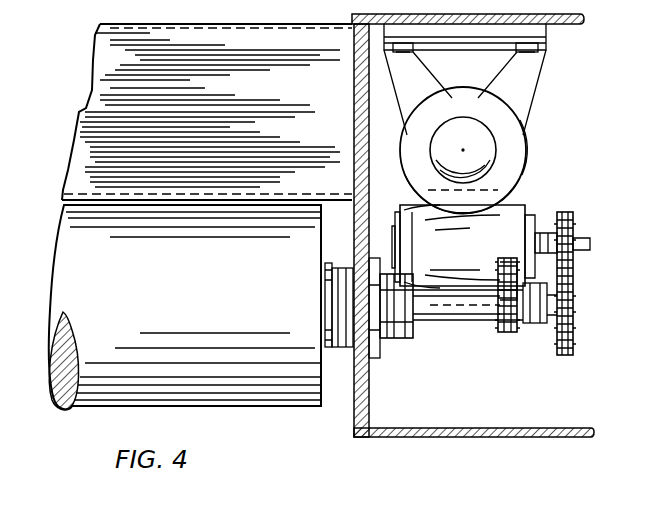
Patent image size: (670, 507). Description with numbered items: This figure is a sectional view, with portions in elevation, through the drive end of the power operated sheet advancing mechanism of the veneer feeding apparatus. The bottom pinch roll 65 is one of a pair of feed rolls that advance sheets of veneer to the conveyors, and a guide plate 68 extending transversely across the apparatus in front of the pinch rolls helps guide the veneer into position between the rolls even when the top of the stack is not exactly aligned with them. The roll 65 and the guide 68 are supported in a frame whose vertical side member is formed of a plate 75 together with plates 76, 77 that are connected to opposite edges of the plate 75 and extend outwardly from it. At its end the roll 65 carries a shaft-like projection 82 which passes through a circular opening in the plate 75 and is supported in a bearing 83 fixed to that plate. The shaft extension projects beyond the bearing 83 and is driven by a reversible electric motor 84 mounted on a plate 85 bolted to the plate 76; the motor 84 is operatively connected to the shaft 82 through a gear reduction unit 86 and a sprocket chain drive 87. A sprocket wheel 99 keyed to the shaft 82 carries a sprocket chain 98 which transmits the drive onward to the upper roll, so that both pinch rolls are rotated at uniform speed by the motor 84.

The guide plate 68 is at (75, 138).
The bottom pinch roll 65 is at (290, 400).
The plate 76 is at (572, 27).
The plate 75 is at (369, 410).
The plate 77 is at (528, 428).
The plate 85 is at (490, 36).
The reversible electric motor 84 is at (506, 140).
The gear reduction unit 86 is at (528, 200).
The bearing 83 is at (406, 340).
The shaft-like projection 82 is at (460, 322).
The sprocket wheel 99 is at (523, 334).
The sprocket chain 98 is at (498, 264).
The sprocket chain drive 87 is at (576, 266).